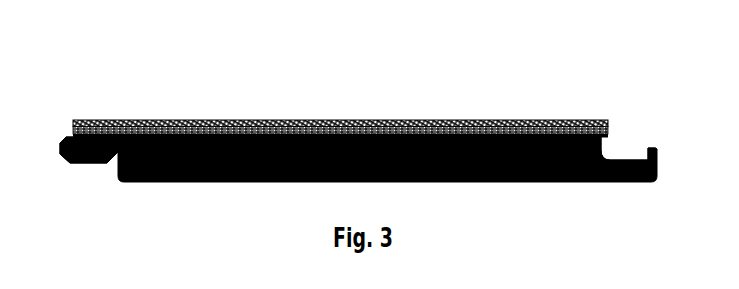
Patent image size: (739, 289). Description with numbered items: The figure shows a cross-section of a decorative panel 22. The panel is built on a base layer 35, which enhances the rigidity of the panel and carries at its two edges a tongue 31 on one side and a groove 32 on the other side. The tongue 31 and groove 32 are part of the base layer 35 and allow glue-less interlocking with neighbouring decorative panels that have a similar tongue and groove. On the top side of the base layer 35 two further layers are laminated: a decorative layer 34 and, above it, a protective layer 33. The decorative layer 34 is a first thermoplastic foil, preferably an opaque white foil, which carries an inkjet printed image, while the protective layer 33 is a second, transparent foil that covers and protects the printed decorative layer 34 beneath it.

The decorative panel 22 is at (362, 121).
The tongue 31 is at (62, 162).
The groove 32 is at (620, 152).
The protective layer 33 is at (374, 119).
The decorative layer 34 is at (422, 133).
The base layer 35 is at (485, 137).